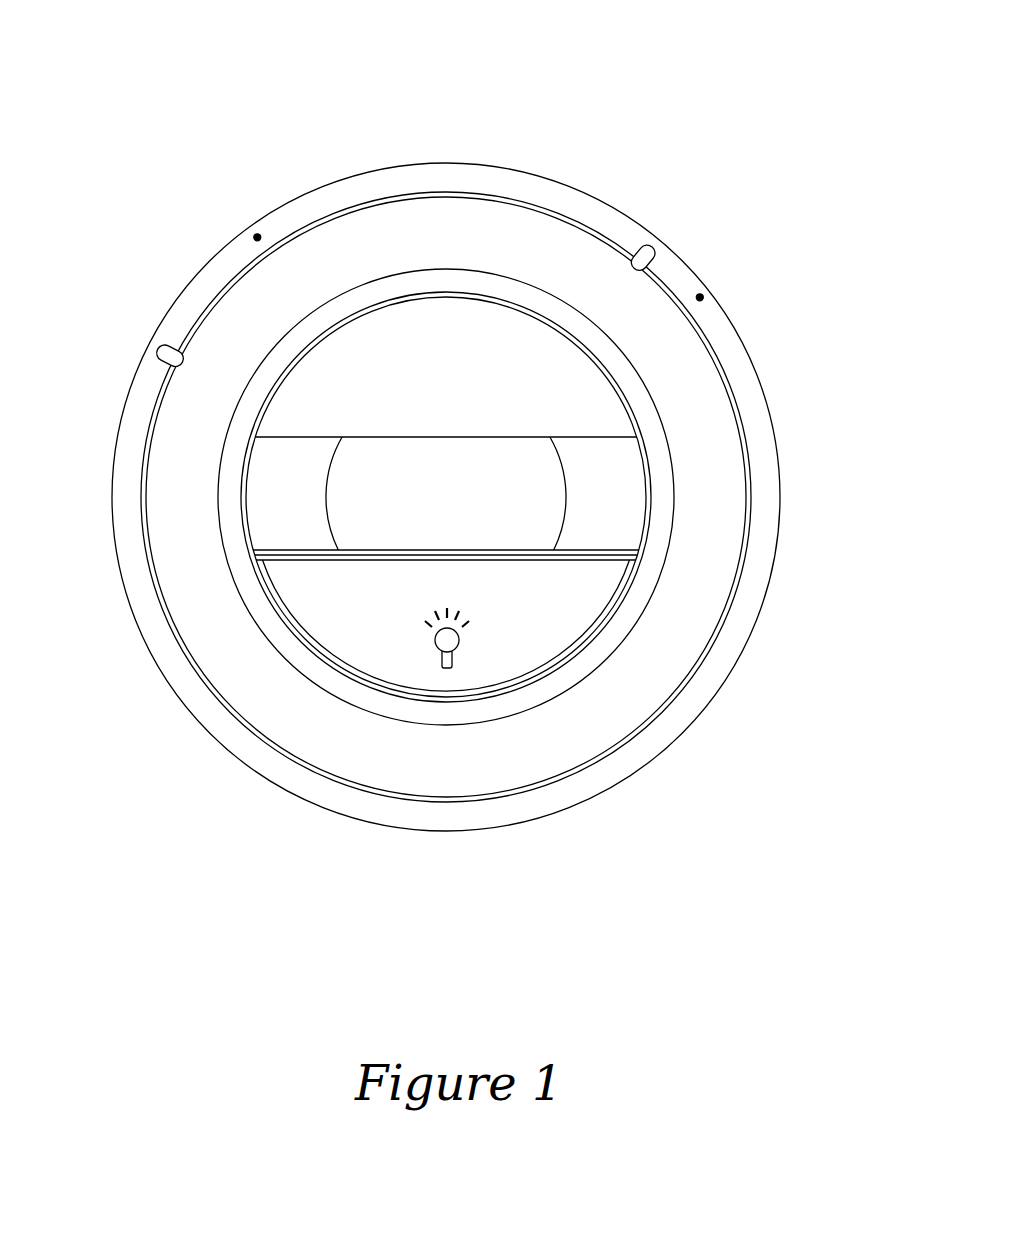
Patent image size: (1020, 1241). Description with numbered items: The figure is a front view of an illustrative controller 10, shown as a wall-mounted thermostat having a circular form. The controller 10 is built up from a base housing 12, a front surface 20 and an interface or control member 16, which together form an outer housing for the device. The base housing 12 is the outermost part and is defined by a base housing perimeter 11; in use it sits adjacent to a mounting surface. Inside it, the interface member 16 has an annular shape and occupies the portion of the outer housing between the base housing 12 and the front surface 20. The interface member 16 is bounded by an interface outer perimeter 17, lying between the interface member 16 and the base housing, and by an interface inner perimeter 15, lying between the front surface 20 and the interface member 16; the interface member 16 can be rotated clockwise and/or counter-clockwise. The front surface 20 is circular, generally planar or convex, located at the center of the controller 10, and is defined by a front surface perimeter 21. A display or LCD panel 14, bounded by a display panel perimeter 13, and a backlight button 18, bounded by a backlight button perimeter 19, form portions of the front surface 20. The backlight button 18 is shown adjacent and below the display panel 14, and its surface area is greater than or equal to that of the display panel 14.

The controller 10 is at (455, 459).
The base housing perimeter 11 is at (432, 163).
The base housing 12 is at (762, 440).
The display panel perimeter 13 is at (330, 496).
The display panel 14 is at (505, 470).
The interface inner perimeter 15 is at (467, 695).
The interface member 16 is at (680, 620).
The interface outer perimeter 17 is at (628, 737).
The backlight button 18 is at (305, 597).
The backlight button perimeter 19 is at (318, 645).
The front surface 20 is at (568, 378).
The front surface perimeter 21 is at (652, 515).